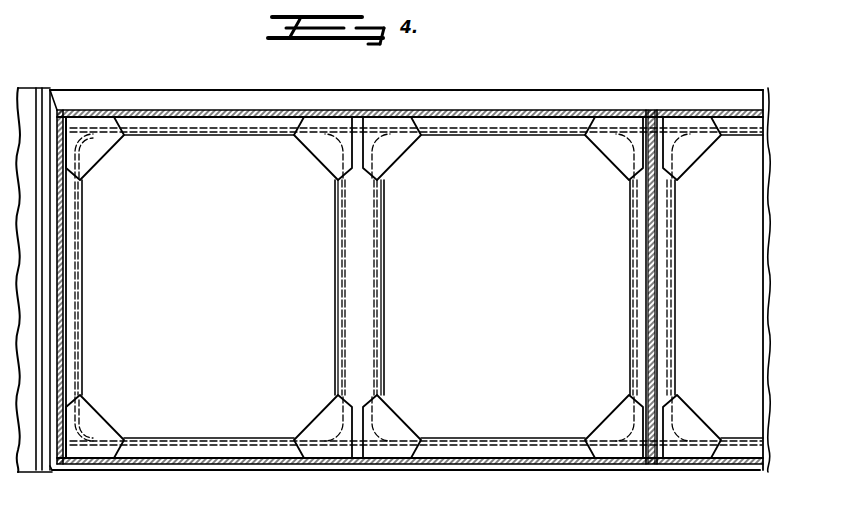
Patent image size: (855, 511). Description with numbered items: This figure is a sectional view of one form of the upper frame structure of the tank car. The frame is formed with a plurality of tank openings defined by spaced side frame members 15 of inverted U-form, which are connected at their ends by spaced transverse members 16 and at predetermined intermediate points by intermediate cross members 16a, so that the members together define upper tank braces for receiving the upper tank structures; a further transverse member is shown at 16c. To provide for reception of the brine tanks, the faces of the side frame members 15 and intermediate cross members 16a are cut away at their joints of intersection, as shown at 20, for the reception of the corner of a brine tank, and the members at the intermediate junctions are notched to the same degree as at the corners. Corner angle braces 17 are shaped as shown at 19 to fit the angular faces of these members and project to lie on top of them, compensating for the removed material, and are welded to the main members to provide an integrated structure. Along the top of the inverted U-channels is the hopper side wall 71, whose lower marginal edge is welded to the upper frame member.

The side frame member 15 is at (410, 123).
The transverse member 16 is at (89, 287).
The intermediate cross member 16a is at (531, 287).
The bottom rail 16c is at (406, 473).
The corner angle brace 17 is at (252, 261).
The shaped portion of corner angle brace 19 is at (121, 121).
The cut 20 is at (507, 151).
The side wall 71 is at (406, 86).